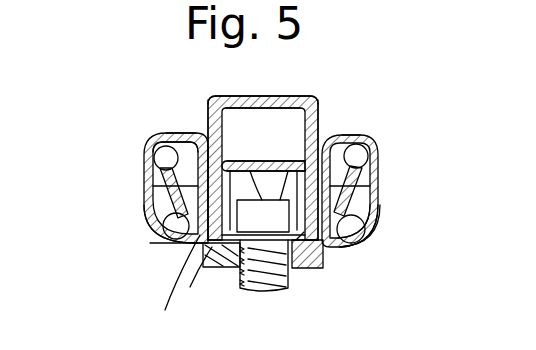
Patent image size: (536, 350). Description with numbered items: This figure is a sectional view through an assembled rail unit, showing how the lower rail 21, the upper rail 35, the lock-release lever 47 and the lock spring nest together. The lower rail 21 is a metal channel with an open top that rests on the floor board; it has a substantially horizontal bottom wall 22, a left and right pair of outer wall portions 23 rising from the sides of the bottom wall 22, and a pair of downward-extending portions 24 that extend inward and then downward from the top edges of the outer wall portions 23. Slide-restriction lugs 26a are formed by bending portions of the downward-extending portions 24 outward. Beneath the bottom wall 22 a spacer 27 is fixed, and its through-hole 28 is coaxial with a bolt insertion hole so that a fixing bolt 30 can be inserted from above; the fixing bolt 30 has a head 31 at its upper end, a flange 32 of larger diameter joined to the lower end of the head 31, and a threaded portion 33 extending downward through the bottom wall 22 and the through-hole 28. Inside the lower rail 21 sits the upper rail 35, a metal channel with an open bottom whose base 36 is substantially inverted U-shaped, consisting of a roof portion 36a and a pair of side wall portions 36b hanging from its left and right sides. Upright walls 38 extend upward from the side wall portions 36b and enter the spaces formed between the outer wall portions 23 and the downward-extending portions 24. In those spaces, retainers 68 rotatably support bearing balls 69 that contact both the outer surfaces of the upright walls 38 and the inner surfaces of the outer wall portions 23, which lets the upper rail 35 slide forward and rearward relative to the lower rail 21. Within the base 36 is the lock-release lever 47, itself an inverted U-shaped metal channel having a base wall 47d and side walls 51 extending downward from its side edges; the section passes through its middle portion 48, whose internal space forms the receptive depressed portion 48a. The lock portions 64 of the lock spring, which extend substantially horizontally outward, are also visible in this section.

The lower rail 21 is at (366, 158).
The bottom wall 22 is at (372, 262).
The outer wall portion 23 is at (146, 212).
The downward-extending portion 24 is at (194, 138).
The slide-restriction lug 26a is at (146, 165).
The spacer 27 is at (332, 266).
The through-hole 28 is at (238, 277).
The fixing bolt 30 is at (192, 279).
The head 31 is at (274, 163).
The flange 32 is at (306, 268).
The threaded portion 33 is at (270, 292).
The upper rail 35 is at (300, 101).
The base 36 is at (262, 98).
The roof portion 36a is at (262, 98).
The side wall portion 36b is at (205, 118).
The upright wall 38 is at (152, 228).
The lock-release lever 47 is at (263, 141).
The base wall 47d is at (218, 104).
The middle portion 48 is at (270, 136).
The receptive depressed portion 48a is at (260, 201).
The side wall 51 is at (306, 296).
The lock portion 64 is at (376, 248).
The retainer 68 is at (152, 182).
The bearing ball 69 is at (160, 148).